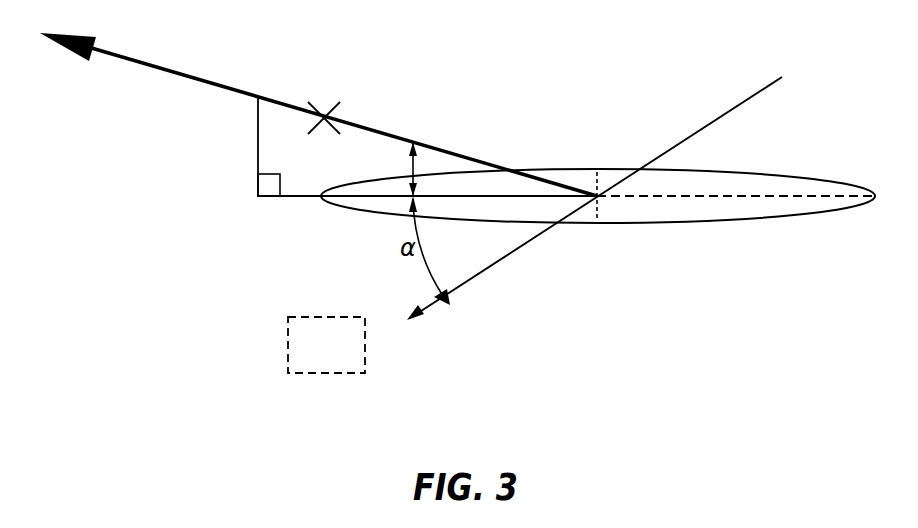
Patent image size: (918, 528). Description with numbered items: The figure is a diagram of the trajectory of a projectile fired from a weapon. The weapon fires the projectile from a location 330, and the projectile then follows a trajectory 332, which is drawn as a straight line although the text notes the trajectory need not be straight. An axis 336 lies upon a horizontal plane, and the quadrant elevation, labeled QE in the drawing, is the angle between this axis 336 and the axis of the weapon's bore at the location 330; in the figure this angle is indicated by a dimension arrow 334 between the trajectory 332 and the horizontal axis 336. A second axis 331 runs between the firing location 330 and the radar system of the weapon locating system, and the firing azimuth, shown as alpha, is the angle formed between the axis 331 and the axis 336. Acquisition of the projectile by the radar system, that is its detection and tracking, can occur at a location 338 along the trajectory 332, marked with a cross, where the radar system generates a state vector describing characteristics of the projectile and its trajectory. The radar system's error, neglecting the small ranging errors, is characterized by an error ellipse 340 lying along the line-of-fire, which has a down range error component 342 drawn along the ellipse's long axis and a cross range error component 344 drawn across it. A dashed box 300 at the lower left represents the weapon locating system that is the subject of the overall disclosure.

The spacecraft / observer 300 is at (289, 343).
The location 330 is at (599, 200).
The axis 331 is at (482, 270).
The trajectory 332 is at (186, 74).
The QE offset arrow 334 is at (415, 172).
The axis 336 is at (302, 198).
The location 338 is at (327, 110).
The error ellipse 340 is at (748, 172).
The down range error component 342 is at (758, 198).
The cross range error component 344 is at (595, 188).